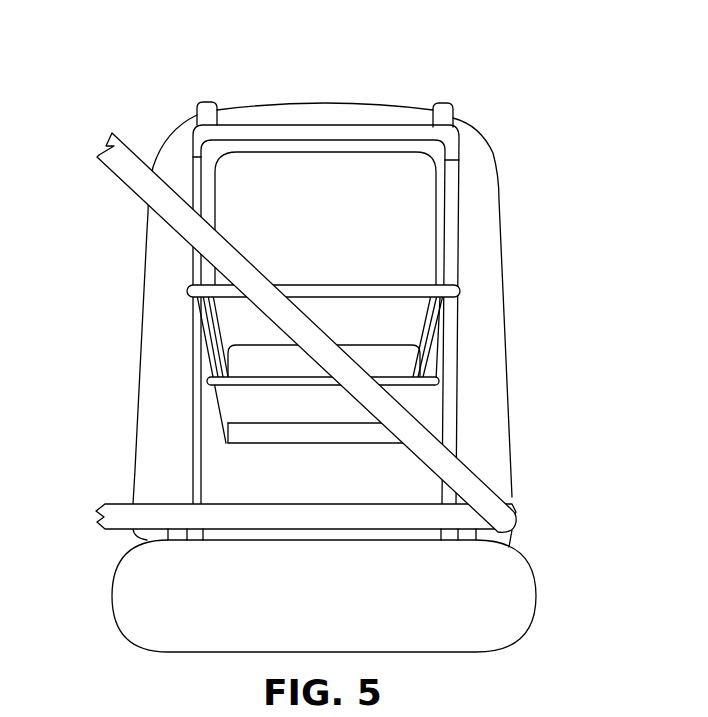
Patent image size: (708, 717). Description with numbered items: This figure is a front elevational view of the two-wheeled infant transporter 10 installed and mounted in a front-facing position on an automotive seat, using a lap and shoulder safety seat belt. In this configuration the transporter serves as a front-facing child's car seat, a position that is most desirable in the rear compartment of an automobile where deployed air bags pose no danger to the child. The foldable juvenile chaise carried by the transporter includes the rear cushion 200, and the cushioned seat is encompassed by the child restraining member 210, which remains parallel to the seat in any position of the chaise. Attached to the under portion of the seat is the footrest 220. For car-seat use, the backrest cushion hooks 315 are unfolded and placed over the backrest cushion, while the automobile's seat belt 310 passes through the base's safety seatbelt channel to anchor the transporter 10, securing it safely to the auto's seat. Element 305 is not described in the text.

The two-wheeled infant transporter 10 is at (140, 113).
The rear cushion 200 is at (356, 251).
The child restraining member 210 is at (406, 290).
The footrest 220 is at (227, 423).
The base cushion 305 is at (341, 624).
The seat belt 310 is at (517, 513).
The backrest cushion hooks 315 is at (211, 101).